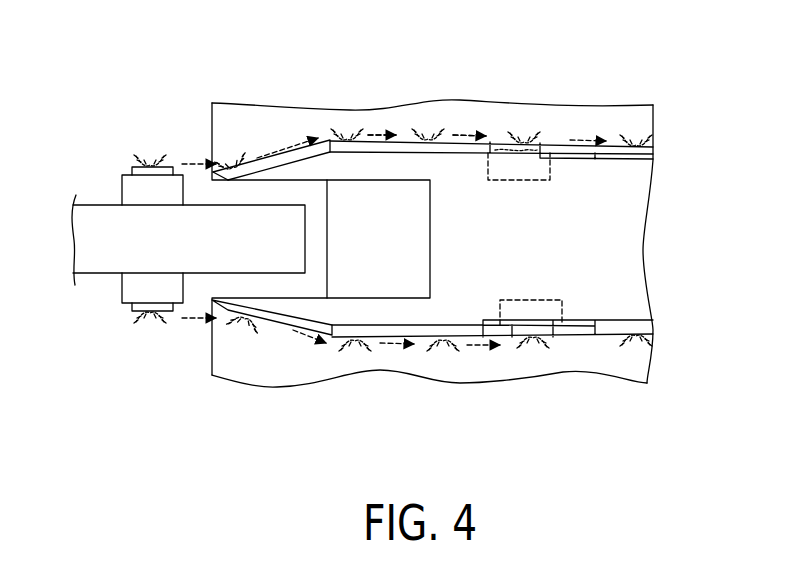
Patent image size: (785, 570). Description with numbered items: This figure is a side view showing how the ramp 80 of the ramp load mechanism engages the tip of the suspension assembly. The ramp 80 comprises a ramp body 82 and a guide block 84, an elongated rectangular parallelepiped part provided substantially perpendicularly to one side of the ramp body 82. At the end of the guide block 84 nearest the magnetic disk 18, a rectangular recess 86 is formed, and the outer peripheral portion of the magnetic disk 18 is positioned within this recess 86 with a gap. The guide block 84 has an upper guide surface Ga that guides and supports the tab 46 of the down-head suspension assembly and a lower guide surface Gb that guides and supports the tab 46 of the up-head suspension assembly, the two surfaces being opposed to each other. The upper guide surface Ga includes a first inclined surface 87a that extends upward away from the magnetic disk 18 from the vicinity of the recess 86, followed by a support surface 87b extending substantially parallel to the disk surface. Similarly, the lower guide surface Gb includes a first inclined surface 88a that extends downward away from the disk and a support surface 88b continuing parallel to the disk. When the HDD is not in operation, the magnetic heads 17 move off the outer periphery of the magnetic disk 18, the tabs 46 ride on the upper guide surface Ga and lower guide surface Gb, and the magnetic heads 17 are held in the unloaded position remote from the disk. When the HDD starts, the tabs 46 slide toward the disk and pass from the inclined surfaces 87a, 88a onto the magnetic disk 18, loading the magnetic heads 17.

The magnetic head 17 is at (128, 189).
The magnetic disk 18 is at (86, 241).
The tab 46 is at (138, 156).
The ramp 80 is at (538, 82).
The ramp body 82 is at (655, 130).
The guide block 84 is at (622, 228).
The recess 86 is at (286, 185).
The first inclined surface 87a is at (298, 140).
The support surface 87b is at (565, 143).
The first inclined surface 88a is at (280, 336).
The support surface 88b is at (465, 345).
The upper guide surface Ga is at (621, 128).
The lower guide surface Gb is at (606, 339).